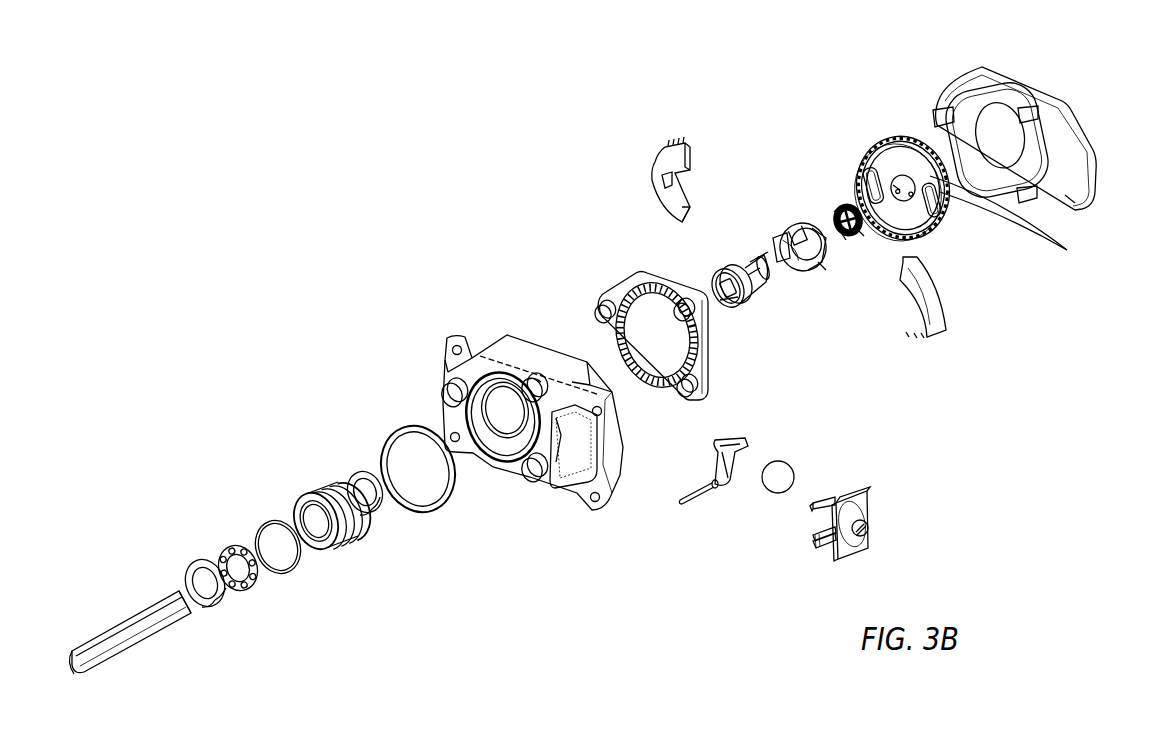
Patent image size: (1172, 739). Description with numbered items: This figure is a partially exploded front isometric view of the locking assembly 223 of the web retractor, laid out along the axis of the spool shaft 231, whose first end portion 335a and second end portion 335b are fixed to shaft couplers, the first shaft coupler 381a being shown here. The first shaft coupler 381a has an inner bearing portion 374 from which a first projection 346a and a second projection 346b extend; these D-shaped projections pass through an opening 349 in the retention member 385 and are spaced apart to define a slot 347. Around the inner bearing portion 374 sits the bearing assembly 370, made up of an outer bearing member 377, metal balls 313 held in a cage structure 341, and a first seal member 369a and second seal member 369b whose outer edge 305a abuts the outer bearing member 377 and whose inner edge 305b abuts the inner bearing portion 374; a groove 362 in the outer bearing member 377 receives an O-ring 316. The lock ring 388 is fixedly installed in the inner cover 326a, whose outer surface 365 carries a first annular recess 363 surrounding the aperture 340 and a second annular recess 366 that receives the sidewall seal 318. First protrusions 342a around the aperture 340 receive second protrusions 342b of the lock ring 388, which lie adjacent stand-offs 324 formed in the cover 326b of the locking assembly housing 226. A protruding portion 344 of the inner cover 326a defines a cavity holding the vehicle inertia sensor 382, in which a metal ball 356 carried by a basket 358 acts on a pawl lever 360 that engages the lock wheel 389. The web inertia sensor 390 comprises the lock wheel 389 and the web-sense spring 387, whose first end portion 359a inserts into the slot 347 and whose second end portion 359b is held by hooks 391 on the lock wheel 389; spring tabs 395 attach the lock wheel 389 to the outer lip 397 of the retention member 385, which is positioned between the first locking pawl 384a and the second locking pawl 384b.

The locking assembly 223 is at (357, 323).
The locking assembly housing 226 is at (1021, 139).
The spool shaft 231 is at (150, 610).
The outer edge 305a is at (188, 572).
The inner edge 305b is at (210, 600).
The metal balls 313 is at (235, 548).
The O-ring 316 is at (272, 520).
The sidewall seal 318 is at (388, 430).
The stand-offs 324 is at (1024, 195).
The inner cover 326a is at (499, 433).
The cover 326b is at (1073, 202).
The first end portion 335a is at (182, 615).
The second end portion 335b is at (80, 668).
The aperture 340 is at (500, 425).
The cage structure 341 is at (200, 560).
The first protrusions 342a is at (515, 380).
The second protrusions 342b is at (600, 322).
The protruding portion 344 is at (600, 478).
The first projection 346a is at (757, 283).
The second projection 346b is at (735, 270).
The slot 347 is at (755, 263).
The opening 349 is at (798, 236).
The metal ball 356 is at (790, 465).
The basket 358 is at (866, 510).
The first end portion 359a is at (834, 215).
The second end portion 359b is at (862, 232).
The pawl lever 360 is at (730, 485).
The groove 362 is at (350, 530).
The first annular recess 363 is at (480, 383).
The outer surface 365 is at (530, 380).
The second annular recess 366 is at (467, 410).
The first seal member 369a is at (228, 598).
The second seal member 369b is at (374, 512).
The bearing assembly 370 is at (508, 533).
The inner bearing portion 374 is at (766, 277).
The outer bearing member 377 is at (307, 503).
The first shaft coupler 381a is at (732, 306).
The vehicle inertia sensor 382 is at (672, 507).
The first locking pawl 384a is at (947, 305).
The second locking pawl 384b is at (660, 172).
The retention member 385 is at (826, 265).
The web-sense spring 387 is at (854, 236).
The lock ring 388 is at (691, 357).
The lock wheel 389 is at (950, 225).
The web inertia sensor 390 is at (737, 200).
The hooks 391 is at (1019, 219).
The spring tabs 395 is at (897, 185).
The outer lip 397 is at (846, 240).